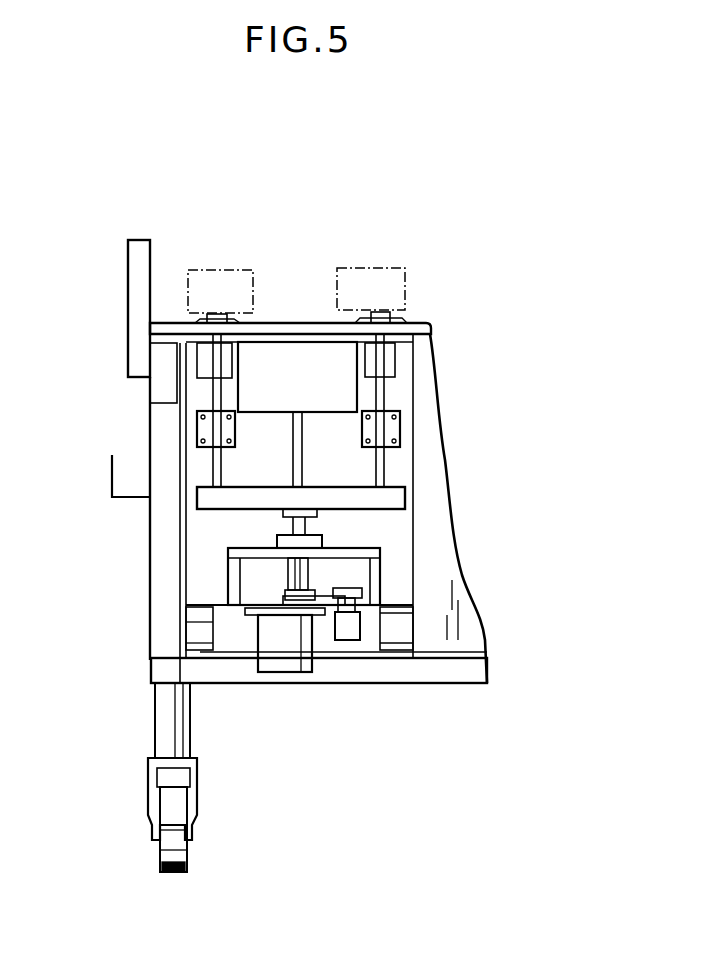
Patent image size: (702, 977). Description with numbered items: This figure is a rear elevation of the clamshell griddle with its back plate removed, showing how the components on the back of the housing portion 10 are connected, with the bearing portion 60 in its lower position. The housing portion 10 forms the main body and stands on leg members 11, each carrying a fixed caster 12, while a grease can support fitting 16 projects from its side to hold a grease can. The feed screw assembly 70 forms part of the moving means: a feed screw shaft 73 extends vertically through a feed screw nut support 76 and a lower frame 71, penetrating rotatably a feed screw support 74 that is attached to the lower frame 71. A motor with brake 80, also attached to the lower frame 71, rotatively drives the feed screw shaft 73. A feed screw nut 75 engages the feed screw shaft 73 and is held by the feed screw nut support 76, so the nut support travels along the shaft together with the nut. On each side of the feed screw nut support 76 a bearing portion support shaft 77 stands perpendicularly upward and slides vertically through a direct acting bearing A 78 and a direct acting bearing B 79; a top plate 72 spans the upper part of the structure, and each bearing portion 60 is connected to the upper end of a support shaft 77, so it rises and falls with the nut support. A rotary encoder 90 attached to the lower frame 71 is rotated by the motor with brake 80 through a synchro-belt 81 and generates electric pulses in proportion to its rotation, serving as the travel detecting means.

The housing portion 10 is at (140, 626).
The leg member 11 is at (166, 722).
The fixed caster 12 is at (164, 852).
The grease can support fitting 16 is at (112, 479).
The bearing portion 60 is at (219, 268).
The feed screw assembly 70 is at (392, 529).
The lower frame 71 is at (381, 576).
The top plate 72 is at (299, 325).
The feed screw shaft 73 is at (300, 472).
The feed screw support 74 is at (381, 543).
The feed screw nut 75 is at (312, 520).
The feed screw nut support 76 is at (398, 496).
The bearing portion support shaft 77 is at (210, 382).
The direct acting bearing A 78 is at (396, 428).
The direct acting bearing B 79 is at (386, 358).
The motor with brake 80 is at (291, 676).
The synchro-belt 81 is at (328, 600).
The rotary encoder 90 is at (350, 632).